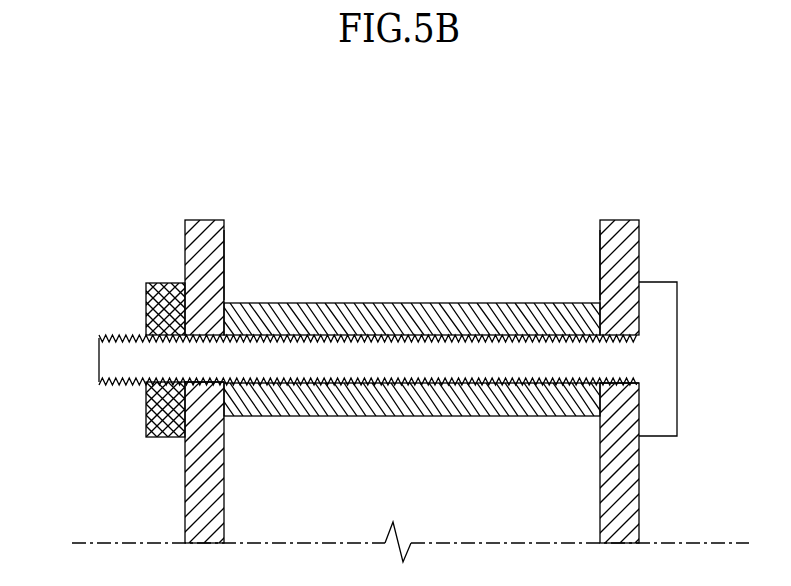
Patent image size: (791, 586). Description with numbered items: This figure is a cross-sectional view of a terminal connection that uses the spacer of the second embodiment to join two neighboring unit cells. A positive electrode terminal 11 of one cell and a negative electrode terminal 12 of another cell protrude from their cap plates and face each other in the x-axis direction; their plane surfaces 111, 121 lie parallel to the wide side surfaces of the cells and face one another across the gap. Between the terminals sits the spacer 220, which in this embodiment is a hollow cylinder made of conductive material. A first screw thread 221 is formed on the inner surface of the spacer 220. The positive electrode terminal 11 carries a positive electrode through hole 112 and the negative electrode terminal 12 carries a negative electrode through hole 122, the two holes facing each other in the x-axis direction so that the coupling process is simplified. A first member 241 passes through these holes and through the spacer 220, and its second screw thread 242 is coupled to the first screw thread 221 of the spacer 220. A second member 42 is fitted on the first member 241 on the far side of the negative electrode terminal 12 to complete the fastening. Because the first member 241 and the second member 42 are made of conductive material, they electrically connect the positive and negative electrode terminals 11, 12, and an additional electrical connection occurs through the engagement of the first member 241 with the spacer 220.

The positive electrode terminal 11 is at (624, 210).
The negative electrode terminal 12 is at (206, 210).
The plane surface 111 is at (600, 275).
The positive electrode through hole 112 is at (632, 383).
The plane surface 121 is at (224, 262).
The negative electrode through hole 122 is at (201, 383).
The spacer 220 is at (400, 304).
The first screw thread 221 is at (320, 340).
The first member 241 is at (665, 318).
The second screw thread 242 is at (492, 383).
The second member 42 is at (146, 302).